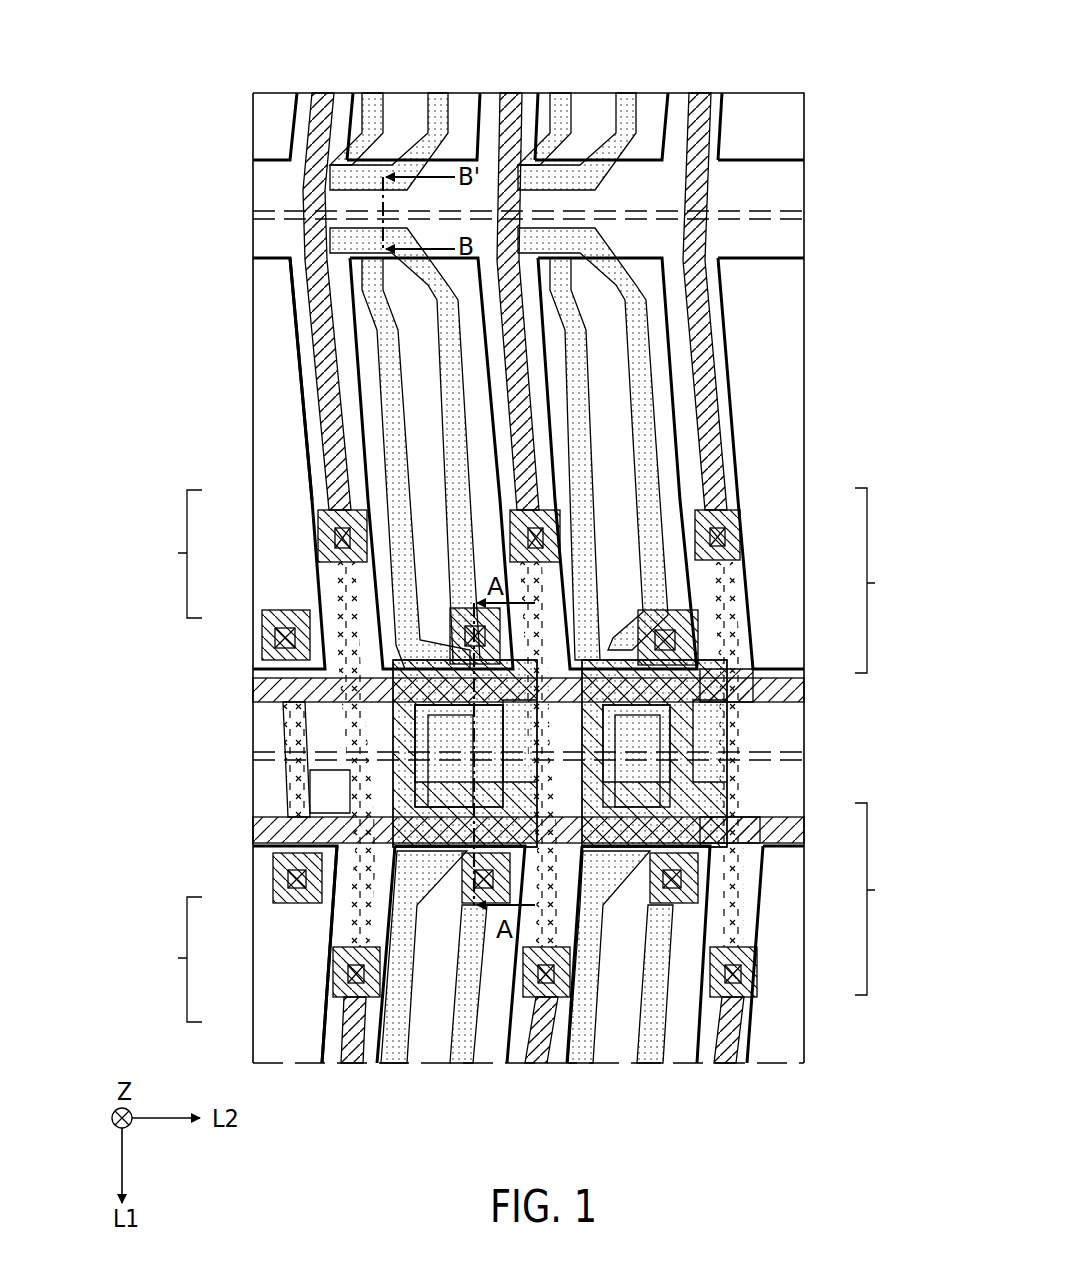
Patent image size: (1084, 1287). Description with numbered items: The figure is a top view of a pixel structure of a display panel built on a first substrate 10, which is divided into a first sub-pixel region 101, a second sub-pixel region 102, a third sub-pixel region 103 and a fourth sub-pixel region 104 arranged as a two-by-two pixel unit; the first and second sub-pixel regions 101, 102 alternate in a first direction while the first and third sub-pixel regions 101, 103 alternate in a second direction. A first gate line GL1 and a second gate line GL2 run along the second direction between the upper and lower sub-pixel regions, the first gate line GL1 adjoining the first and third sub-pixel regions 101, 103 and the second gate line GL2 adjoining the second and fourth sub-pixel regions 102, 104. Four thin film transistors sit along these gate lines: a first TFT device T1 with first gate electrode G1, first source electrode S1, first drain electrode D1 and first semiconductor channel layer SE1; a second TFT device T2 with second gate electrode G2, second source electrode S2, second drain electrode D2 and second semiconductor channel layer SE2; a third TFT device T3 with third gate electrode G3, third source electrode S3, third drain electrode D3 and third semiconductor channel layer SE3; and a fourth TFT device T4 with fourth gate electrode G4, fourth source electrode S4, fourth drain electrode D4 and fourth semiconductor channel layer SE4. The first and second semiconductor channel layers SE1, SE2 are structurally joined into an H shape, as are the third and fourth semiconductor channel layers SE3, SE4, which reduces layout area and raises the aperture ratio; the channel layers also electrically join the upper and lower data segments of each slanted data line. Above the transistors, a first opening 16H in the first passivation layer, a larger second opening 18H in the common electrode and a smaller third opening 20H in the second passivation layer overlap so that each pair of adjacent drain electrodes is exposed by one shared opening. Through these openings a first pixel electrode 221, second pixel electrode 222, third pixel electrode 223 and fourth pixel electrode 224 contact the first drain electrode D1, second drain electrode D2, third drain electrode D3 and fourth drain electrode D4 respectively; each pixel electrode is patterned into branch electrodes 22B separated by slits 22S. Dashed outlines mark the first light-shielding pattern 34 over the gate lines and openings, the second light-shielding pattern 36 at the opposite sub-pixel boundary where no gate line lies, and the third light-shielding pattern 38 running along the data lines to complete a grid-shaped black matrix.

The first substrate 10 is at (778, 93).
The second light-shielding pattern 36 is at (283, 187).
The first sub-pixel region 101 is at (307, 227).
The third sub-pixel region 103 is at (690, 215).
The third light-shielding pattern 38 is at (305, 355).
The slit 22S is at (405, 309).
The branch electrode 22B is at (380, 325).
The first pixel electrode 221 is at (390, 420).
The third pixel electrode 223 is at (640, 350).
The second pixel electrode 222 is at (387, 1067).
The fourth pixel electrode 224 is at (647, 1067).
The first source electrode S1 is at (330, 515).
The first semiconductor channel layer SE1 is at (365, 585).
The first drain electrode D1 is at (455, 625).
The first gate electrode G1 is at (500, 662).
The first TFT device T1 is at (173, 554).
The second source electrode S2 is at (337, 995).
The second semiconductor channel layer SE2 is at (352, 960).
The second drain electrode D2 is at (475, 882).
The second gate electrode G2 is at (352, 908).
The second TFT device T2 is at (173, 959).
The third source electrode S3 is at (740, 512).
The third semiconductor channel layer SE3 is at (737, 585).
The third drain electrode D3 is at (688, 615).
The third gate electrode G3 is at (707, 685).
The third TFT device T3 is at (882, 580).
The fourth source electrode S4 is at (750, 965).
The fourth semiconductor channel layer SE4 is at (743, 880).
The fourth drain electrode D4 is at (693, 893).
The fourth gate electrode G4 is at (720, 835).
The fourth TFT device T4 is at (882, 899).
The first gate line GL1 is at (262, 690).
The second gate line GL2 is at (262, 830).
The first opening 16H is at (262, 762).
The second opening 18H is at (350, 740).
The third opening 20H is at (350, 777).
The first light-shielding pattern 34 is at (264, 857).
The second sub-pixel region 102 is at (323, 1028).
The fourth sub-pixel region 104 is at (320, 1058).